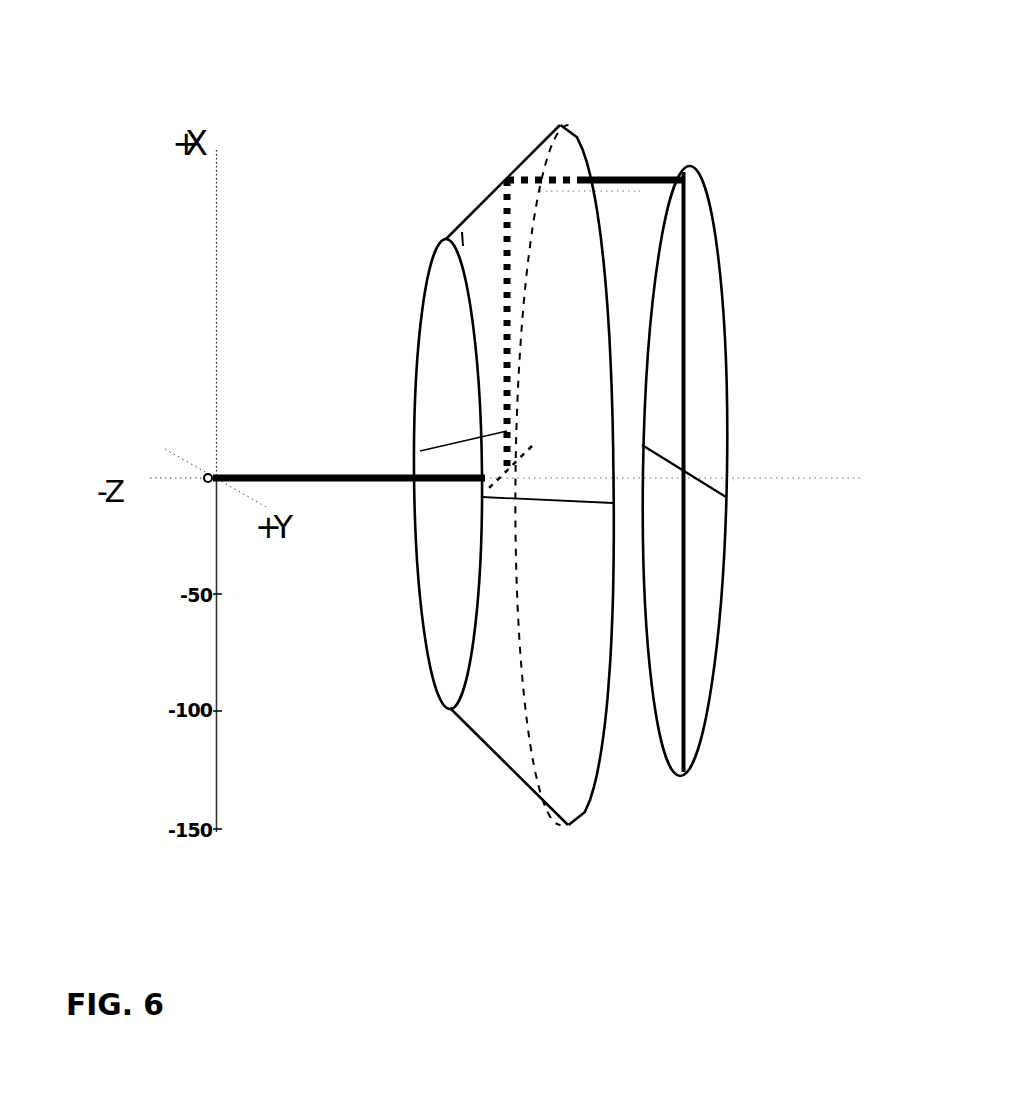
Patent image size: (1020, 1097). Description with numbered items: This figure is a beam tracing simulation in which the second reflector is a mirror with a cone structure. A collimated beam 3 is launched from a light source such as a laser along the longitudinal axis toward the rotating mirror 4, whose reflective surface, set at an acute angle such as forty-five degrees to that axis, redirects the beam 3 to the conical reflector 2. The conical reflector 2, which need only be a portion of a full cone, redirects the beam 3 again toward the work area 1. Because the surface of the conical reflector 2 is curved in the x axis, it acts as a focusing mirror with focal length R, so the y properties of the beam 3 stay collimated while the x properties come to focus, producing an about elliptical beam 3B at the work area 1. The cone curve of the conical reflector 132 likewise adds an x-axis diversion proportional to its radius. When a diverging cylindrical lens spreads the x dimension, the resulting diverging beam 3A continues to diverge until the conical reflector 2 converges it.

The work area 1 is at (687, 208).
The conical reflector 2 is at (471, 210).
The collimated beam 3 is at (250, 468).
The diverging beam 3A is at (505, 403).
The elliptical beam 3B is at (631, 178).
The rotating mirror 4 is at (525, 463).
The conical reflector 132 is at (462, 243).